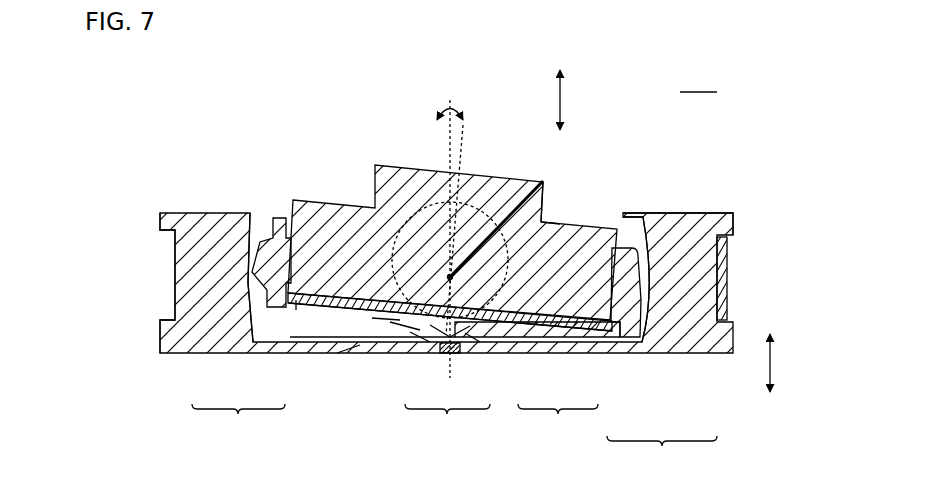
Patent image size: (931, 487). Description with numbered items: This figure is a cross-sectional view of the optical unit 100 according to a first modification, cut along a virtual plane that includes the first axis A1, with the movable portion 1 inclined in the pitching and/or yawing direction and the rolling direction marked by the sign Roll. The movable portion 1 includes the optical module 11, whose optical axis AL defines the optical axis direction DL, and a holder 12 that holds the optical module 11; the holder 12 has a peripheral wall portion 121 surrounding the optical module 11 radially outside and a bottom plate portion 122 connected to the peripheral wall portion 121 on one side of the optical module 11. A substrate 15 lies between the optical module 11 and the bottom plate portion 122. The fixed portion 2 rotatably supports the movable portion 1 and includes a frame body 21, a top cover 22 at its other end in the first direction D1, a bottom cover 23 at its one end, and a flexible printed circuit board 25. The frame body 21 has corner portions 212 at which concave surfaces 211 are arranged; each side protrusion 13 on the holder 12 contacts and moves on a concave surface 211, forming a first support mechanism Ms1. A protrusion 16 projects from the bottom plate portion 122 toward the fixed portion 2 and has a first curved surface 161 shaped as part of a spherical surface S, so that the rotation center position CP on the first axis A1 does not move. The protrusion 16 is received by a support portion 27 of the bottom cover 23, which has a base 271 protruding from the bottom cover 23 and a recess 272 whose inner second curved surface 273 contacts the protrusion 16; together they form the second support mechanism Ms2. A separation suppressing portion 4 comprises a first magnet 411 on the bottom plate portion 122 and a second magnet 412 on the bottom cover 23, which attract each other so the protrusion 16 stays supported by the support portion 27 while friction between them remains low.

The movable portion 1 is at (445, 225).
The fixed portion 2 is at (180, 360).
The separation suppressing portion 4 is at (447, 383).
The optical module 11 is at (380, 178).
The holder 12 is at (503, 363).
The side protrusion 13 is at (250, 263).
The substrate 15 is at (296, 300).
The protrusion 16 is at (480, 324).
The frame body 21 is at (683, 218).
The top cover 22 is at (708, 213).
The bottom cover 23 is at (337, 353).
The flexible printed circuit board 25 is at (730, 264).
The support portion 27 is at (560, 338).
The optical unit 100 is at (656, 136).
The peripheral wall portion 121 is at (652, 264).
The bottom plate portion 122 is at (575, 340).
The first curved surface 161 is at (372, 325).
The concave surface 211 is at (259, 319).
The corner portion 212 is at (208, 265).
The base 271 is at (418, 337).
The recess 272 is at (465, 333).
The second curved surface 273 is at (395, 326).
The first magnet 411 is at (436, 330).
The second magnet 412 is at (452, 336).
The optical axis AL is at (463, 147).
The first axis A1 is at (447, 140).
The rolling direction Roll is at (442, 106).
The rotation center position CP is at (546, 180).
The spherical surface S is at (542, 205).
The optical axis direction DL is at (570, 101).
The first direction D1 is at (781, 362).
The first support mechanism Ms1 is at (238, 427).
The second support mechanism Ms2 is at (558, 424).